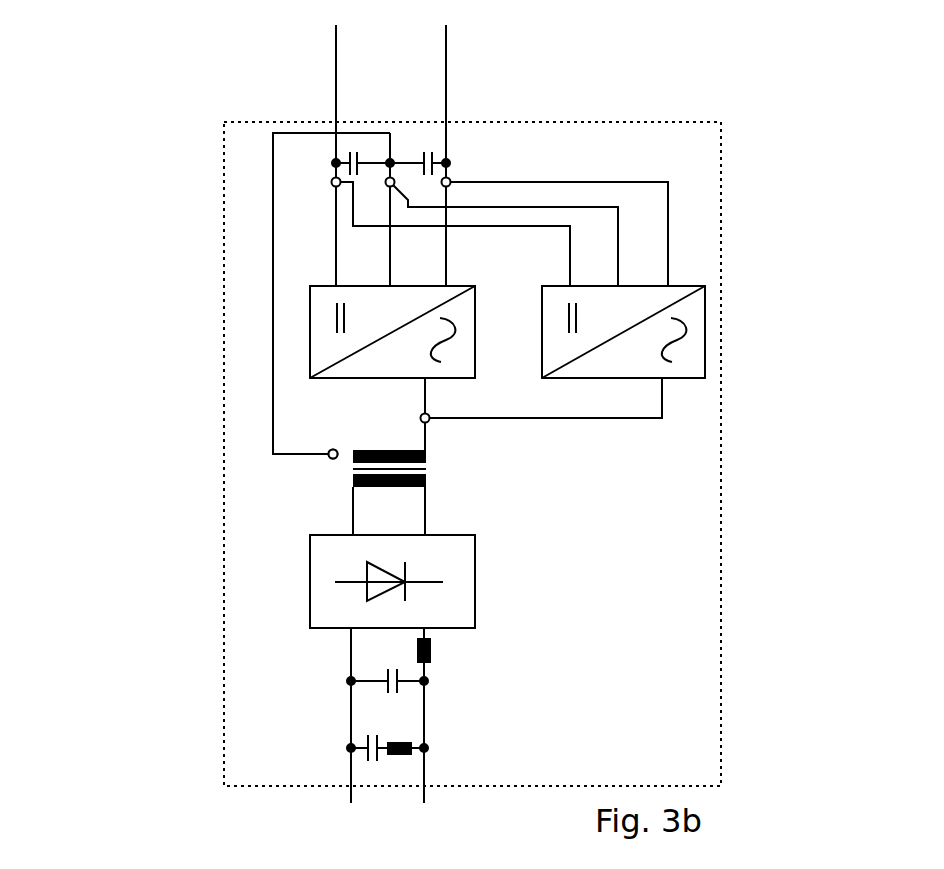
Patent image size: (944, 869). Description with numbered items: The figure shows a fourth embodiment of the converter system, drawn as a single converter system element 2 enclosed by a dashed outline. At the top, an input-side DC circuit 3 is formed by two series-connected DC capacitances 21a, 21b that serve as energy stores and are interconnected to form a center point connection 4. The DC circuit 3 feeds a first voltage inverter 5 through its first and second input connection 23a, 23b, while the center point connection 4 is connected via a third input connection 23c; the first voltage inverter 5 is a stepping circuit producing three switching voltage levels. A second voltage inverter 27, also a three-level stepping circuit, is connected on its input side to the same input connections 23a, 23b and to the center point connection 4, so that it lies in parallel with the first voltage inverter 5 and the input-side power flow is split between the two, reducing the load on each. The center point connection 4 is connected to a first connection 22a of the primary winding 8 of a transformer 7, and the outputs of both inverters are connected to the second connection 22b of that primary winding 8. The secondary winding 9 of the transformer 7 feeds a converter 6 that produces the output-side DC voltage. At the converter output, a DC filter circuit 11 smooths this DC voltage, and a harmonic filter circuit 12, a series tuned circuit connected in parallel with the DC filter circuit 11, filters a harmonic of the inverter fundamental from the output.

The converter system element 2 is at (722, 180).
The input-side DC circuit 3 is at (259, 104).
The center point connection 4 is at (587, 89).
The first voltage inverter 5 is at (310, 337).
The converter 6 is at (475, 580).
The transformer 7 is at (330, 472).
The primary winding 8 is at (426, 455).
The secondary winding 9 is at (426, 486).
The DC filter circuit 11 is at (342, 663).
The harmonic filter circuit 12 is at (327, 748).
The DC capacitance 21a is at (432, 153).
The DC capacitance 21b is at (332, 163).
The first connection of the primary winding 22a is at (329, 456).
The second connection of the primary winding 22b is at (420, 418).
The first input connection 23a is at (451, 181).
The second input connection 23b is at (331, 183).
The third input connection 23c is at (385, 183).
The second voltage inverter 27 is at (705, 340).